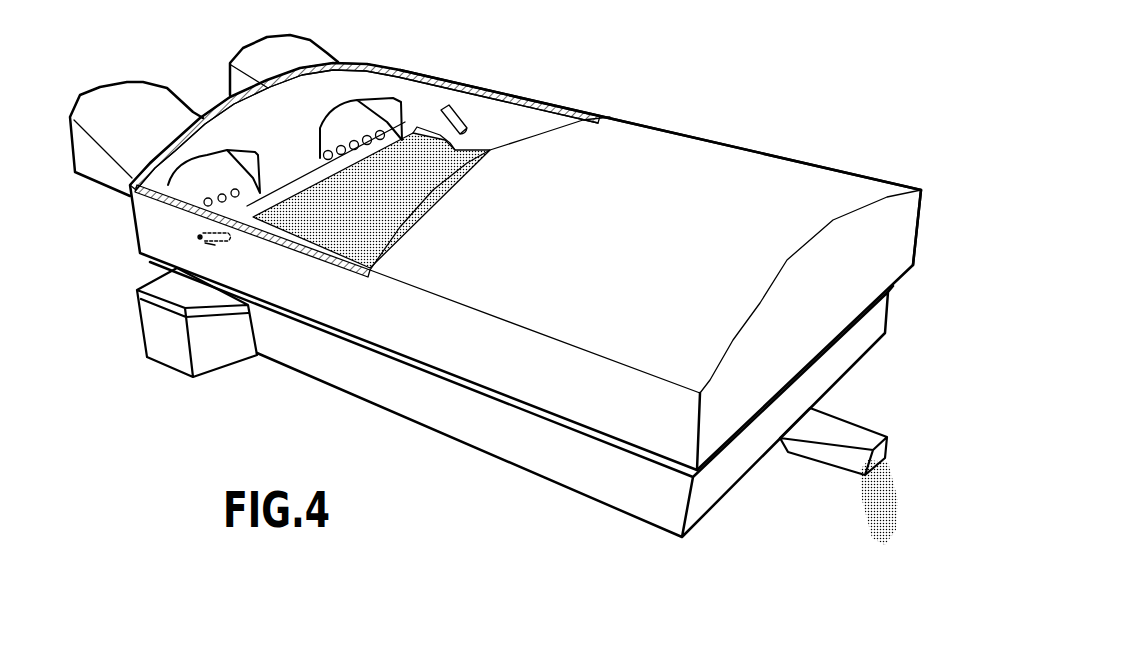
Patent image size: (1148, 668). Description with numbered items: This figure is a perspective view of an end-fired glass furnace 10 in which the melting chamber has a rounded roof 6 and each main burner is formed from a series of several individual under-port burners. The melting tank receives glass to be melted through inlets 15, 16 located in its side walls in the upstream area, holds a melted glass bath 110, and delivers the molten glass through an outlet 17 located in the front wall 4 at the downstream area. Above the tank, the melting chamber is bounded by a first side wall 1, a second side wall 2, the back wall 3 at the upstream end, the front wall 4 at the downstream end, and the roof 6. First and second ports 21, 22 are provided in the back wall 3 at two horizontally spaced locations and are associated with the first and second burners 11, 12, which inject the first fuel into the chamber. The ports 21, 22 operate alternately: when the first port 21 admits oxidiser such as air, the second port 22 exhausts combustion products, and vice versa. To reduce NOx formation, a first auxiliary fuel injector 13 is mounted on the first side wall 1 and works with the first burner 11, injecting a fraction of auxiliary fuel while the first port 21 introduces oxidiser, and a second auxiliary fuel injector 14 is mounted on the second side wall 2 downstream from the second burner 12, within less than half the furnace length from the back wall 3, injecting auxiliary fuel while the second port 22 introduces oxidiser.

The first side wall 1 is at (603, 410).
The second side wall 2 is at (527, 120).
The back wall 3 is at (383, 87).
The front wall 4 is at (887, 240).
The roof 6 is at (600, 143).
The end-fired glass furnace 10 is at (733, 137).
The first burner 11 is at (240, 208).
The second burner 12 is at (325, 153).
The first auxiliary fuel injector 13 is at (213, 244).
The second auxiliary fuel injector 14 is at (458, 108).
The inlet 15 is at (178, 358).
The inlet 16 is at (470, 160).
The outlet 17 is at (867, 440).
The first port 21 is at (247, 163).
The second port 22 is at (383, 108).
The melted glass bath 110 is at (370, 220).